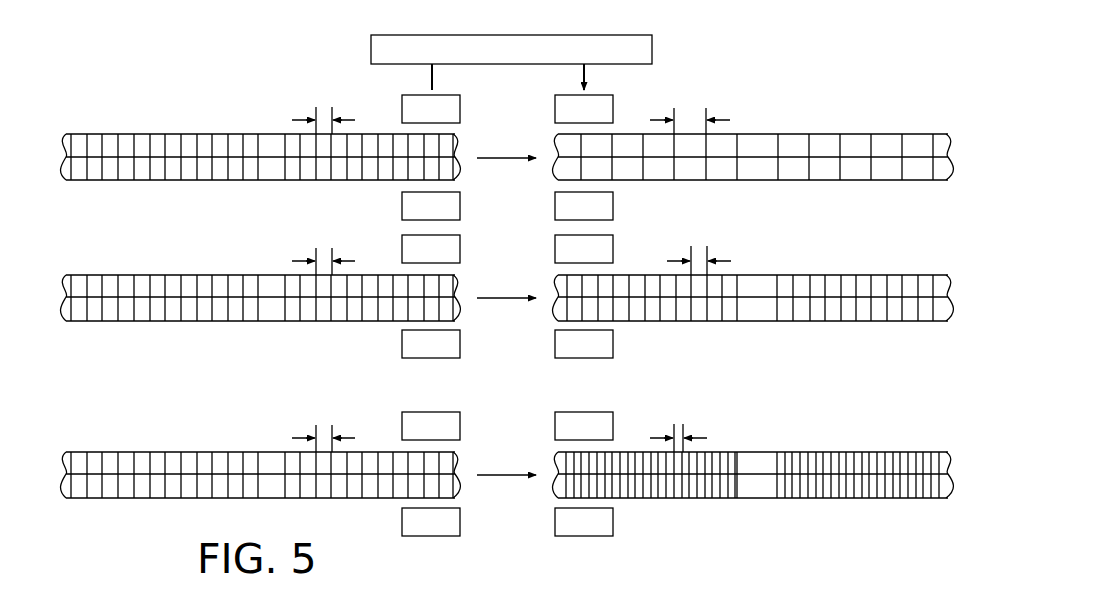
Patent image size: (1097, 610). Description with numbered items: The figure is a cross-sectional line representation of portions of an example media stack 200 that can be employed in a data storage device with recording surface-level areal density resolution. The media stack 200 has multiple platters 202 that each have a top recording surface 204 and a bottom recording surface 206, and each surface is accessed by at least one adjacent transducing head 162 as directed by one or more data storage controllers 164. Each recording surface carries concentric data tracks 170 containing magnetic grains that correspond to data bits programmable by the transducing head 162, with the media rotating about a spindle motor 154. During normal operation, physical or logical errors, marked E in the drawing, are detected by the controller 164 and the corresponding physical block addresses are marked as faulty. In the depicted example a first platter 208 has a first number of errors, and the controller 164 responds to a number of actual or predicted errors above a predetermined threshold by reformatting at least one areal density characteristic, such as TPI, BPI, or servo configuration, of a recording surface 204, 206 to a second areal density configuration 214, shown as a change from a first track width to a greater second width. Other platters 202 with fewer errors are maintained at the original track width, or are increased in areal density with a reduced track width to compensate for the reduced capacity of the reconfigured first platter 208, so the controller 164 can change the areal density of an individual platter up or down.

The media stack 200 is at (130, 47).
The platter 202 is at (62, 133).
The top recording surface 204 is at (135, 133).
The bottom recording surface 206 is at (95, 182).
The data track 170 is at (190, 133).
The spindle motor 154 is at (263, 133).
The second areal density configuration 214 is at (793, 133).
The transducing head 162 is at (507, 315).
The data storage controller 164 is at (511, 62).
The first platter 208 is at (485, 130).